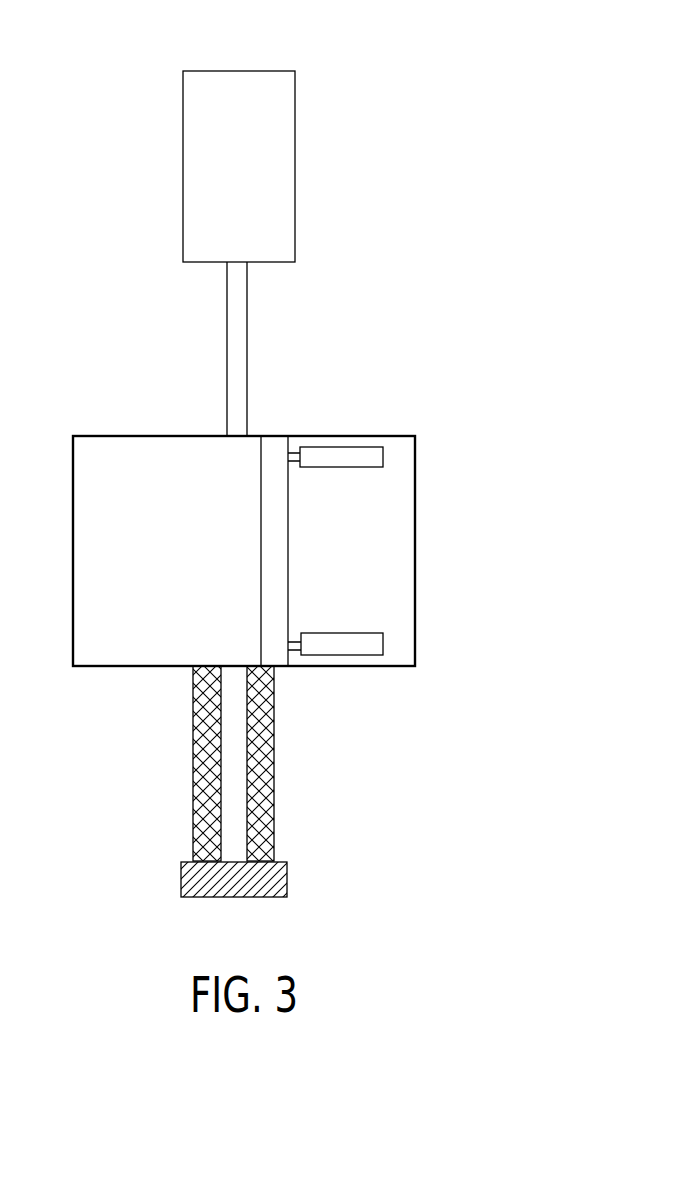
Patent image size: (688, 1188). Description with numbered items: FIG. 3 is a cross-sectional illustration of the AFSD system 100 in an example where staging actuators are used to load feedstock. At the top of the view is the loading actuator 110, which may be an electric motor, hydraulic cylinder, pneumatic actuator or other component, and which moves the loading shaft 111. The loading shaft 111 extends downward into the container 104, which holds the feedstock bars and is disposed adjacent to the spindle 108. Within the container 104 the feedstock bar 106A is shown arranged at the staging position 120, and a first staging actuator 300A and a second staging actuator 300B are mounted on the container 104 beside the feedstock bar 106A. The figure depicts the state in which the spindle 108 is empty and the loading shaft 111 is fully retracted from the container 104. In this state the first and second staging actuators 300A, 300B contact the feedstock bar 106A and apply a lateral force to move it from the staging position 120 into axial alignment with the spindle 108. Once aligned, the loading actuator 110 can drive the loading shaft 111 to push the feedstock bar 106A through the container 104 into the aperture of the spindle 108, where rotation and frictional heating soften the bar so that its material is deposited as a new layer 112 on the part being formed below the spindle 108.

The AFSD system 100 is at (377, 78).
The loading actuator 110 is at (158, 302).
The loading shaft 111 is at (248, 355).
The container 104 is at (416, 555).
The staging position 120 is at (254, 550).
The feedstock bar 106A is at (289, 587).
The first staging actuator 300A is at (340, 446).
The second staging actuator 300B is at (342, 656).
The spindle 108 is at (192, 820).
The new layer 112 is at (288, 877).